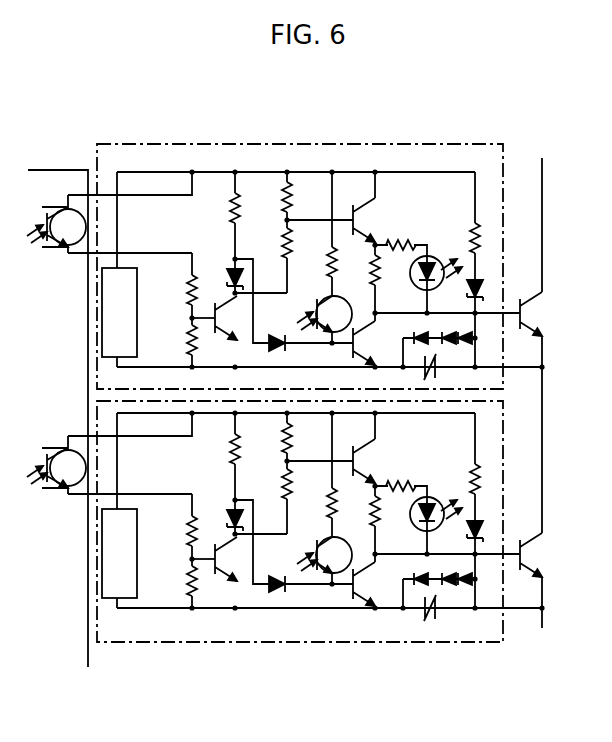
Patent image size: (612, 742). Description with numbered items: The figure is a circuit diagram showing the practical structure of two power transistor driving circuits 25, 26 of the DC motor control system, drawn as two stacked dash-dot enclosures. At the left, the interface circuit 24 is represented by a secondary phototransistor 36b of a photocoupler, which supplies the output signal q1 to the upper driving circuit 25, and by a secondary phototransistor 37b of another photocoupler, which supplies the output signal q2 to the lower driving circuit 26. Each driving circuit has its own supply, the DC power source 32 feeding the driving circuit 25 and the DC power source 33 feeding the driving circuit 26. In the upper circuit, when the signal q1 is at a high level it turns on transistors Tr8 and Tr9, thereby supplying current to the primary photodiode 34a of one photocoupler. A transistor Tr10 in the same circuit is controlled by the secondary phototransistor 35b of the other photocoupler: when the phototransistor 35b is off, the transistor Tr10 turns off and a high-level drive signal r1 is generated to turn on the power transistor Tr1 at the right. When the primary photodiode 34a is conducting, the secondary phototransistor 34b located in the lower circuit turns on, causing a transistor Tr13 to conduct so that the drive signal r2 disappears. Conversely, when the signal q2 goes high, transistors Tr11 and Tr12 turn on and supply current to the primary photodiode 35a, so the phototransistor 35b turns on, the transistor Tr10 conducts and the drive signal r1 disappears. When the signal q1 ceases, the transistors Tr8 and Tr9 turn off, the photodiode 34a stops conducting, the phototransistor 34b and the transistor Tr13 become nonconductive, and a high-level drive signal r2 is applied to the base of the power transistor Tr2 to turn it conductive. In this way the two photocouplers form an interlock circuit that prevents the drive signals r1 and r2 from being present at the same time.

The interface circuit 24 is at (55, 183).
The driving circuit 25 is at (443, 145).
The driving circuit 26 is at (457, 643).
The DC power source 32 is at (138, 307).
The DC power source 33 is at (141, 553).
The primary photodiode 34a is at (437, 257).
The secondary phototransistor 34b is at (326, 592).
The primary photodiode 35a is at (433, 487).
The secondary phototransistor 35b is at (342, 295).
The secondary phototransistor 36b is at (53, 252).
The secondary phototransistor 37b is at (56, 500).
The output signal q1 is at (130, 242).
The output signal q2 is at (130, 483).
The drive signal r1 is at (473, 308).
The drive signal r2 is at (473, 565).
The power transistor Tr1 is at (544, 314).
The power transistor Tr2 is at (544, 555).
The transistor Tr8 is at (225, 318).
The transistor Tr9 is at (378, 220).
The transistor Tr10 is at (381, 343).
The transistor Tr11 is at (230, 559).
The transistor Tr12 is at (383, 461).
The transistor Tr13 is at (381, 584).